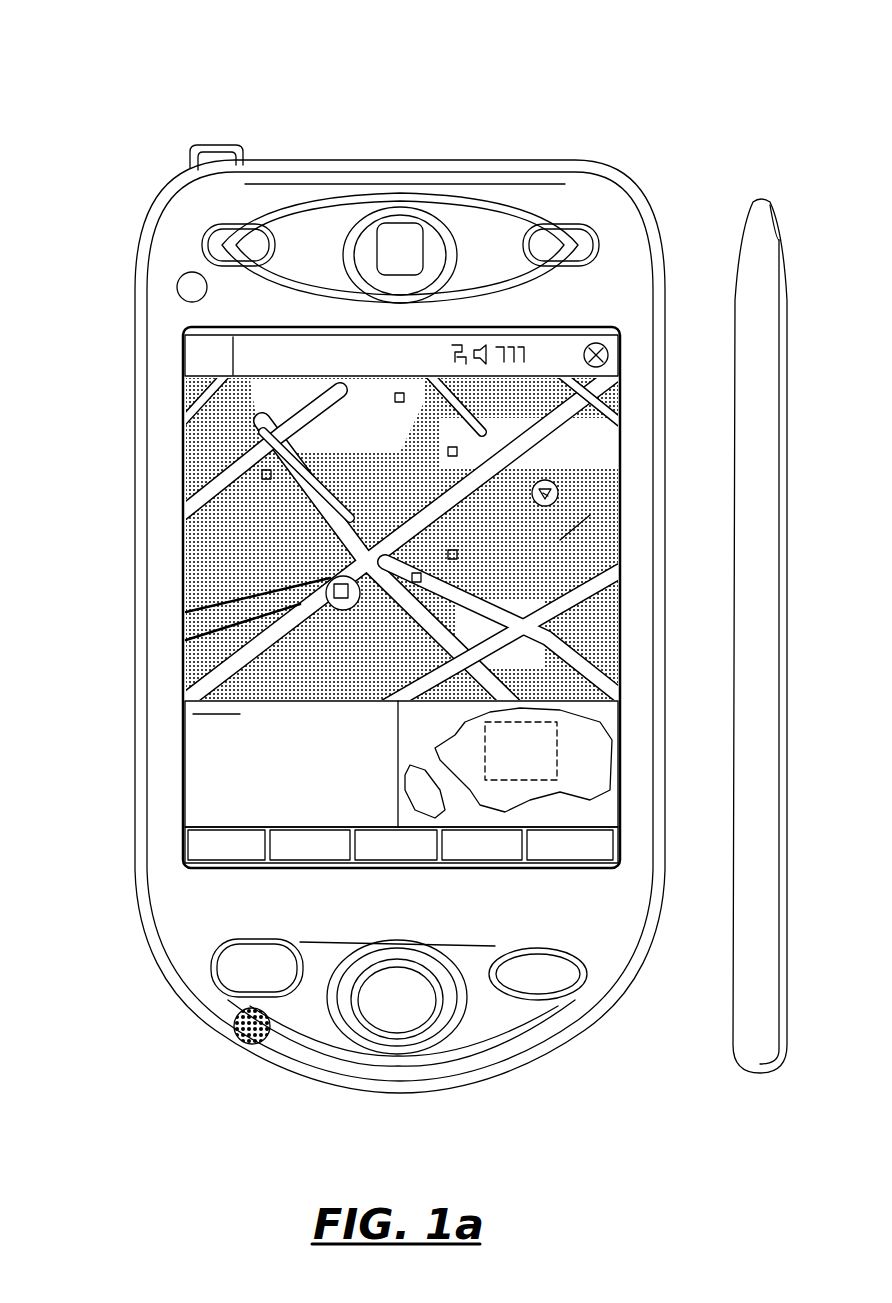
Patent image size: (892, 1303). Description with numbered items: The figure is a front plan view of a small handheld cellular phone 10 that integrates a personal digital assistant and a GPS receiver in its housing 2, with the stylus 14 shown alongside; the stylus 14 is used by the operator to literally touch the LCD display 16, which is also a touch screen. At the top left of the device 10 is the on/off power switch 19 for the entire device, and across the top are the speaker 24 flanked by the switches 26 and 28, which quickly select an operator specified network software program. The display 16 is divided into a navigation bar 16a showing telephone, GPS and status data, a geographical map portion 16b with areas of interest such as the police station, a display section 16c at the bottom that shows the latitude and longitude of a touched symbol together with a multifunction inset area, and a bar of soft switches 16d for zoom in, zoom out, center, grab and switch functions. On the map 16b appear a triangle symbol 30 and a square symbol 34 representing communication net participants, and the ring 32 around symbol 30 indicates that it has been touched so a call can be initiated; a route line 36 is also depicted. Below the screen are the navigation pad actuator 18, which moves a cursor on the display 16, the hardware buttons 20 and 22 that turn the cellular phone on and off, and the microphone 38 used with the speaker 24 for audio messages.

The cellular phone 10 is at (648, 98).
The handheld device housing 2 is at (134, 672).
The stylus 14 is at (790, 440).
The LCD display 16 is at (582, 320).
The navigation bar 16a is at (215, 363).
The display portion 16b is at (172, 528).
The display section 16c is at (180, 767).
The soft switches 16d is at (182, 872).
The navigation pad actuator 18 is at (393, 1010).
The on/off power switch 19 is at (208, 140).
The cellular phone hardware activating button 20 is at (522, 990).
The cellular phone hardware activating button 22 is at (253, 978).
The speaker 24 is at (398, 247).
The switch 26 is at (560, 243).
The switch 28 is at (243, 243).
The symbol 30 is at (558, 488).
The ring 32 is at (560, 540).
The symbol 34 is at (328, 590).
The travel path 36 is at (330, 603).
The microphone 38 is at (251, 1044).